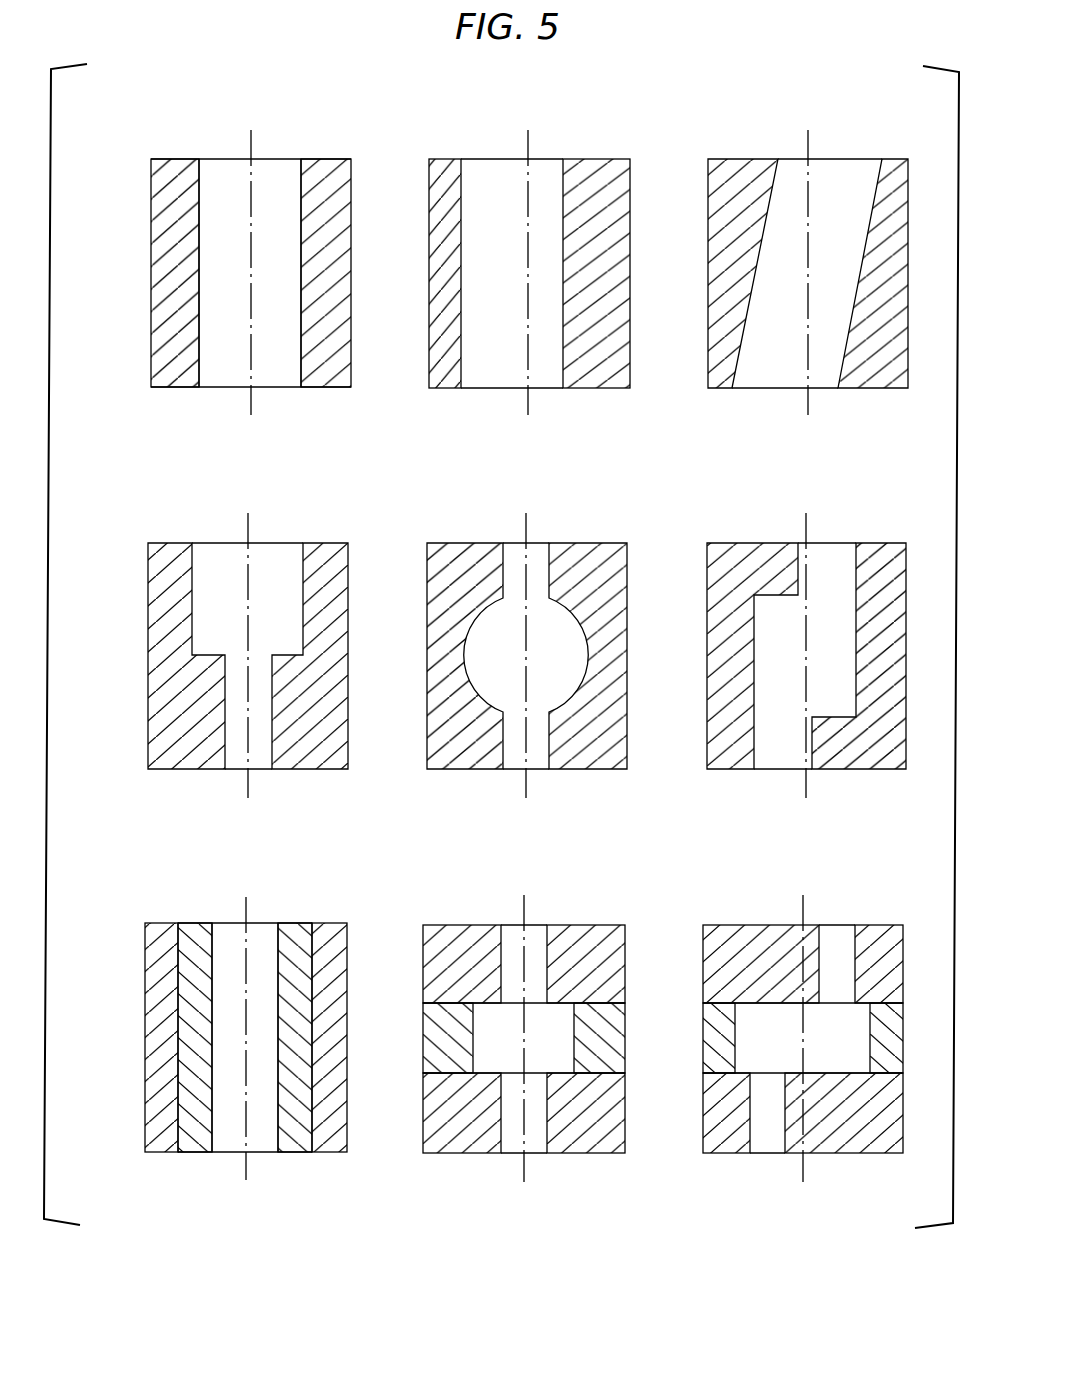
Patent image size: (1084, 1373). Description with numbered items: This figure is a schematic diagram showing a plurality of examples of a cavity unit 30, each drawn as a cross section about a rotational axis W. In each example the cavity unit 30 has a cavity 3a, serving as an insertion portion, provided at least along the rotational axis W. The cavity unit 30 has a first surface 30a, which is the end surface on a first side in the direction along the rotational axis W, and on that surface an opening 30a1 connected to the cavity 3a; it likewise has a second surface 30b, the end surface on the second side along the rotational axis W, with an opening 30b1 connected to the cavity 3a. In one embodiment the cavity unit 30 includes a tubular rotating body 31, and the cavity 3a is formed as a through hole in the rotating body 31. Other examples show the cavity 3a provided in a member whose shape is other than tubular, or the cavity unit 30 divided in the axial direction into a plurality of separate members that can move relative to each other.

The cavity unit 30 is at (130, 240).
The first surface 30a is at (178, 158).
The opening 30a1 is at (287, 158).
The second surface 30b is at (172, 388).
The opening 30b1 is at (272, 390).
The cavity 3a is at (200, 177).
The rotational axis W is at (252, 152).
The tubular rotating body 31 is at (198, 923).